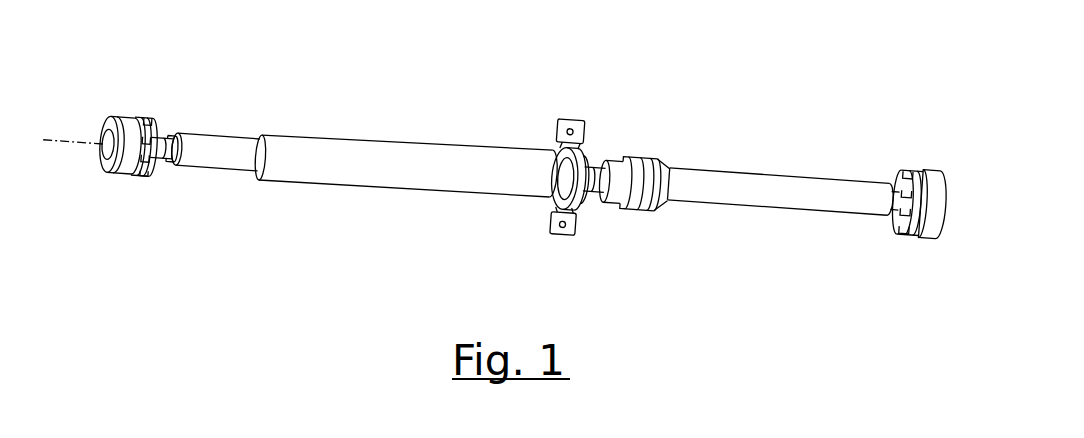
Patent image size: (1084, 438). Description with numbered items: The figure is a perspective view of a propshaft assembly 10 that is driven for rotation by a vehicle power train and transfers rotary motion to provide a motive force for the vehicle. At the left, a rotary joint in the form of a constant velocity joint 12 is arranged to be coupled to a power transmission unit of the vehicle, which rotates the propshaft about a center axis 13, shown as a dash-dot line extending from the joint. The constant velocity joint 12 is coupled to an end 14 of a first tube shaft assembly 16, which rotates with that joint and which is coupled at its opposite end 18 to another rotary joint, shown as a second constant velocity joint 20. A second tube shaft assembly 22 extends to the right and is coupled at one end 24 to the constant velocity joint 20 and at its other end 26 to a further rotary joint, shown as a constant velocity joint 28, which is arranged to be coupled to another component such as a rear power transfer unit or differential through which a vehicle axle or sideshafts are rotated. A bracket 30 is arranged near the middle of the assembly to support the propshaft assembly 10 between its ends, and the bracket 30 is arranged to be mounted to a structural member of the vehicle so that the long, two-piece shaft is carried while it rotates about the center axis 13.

The propshaft assembly 10 is at (786, 94).
The constant velocity joint 12 is at (121, 116).
The center axis 13 is at (84, 142).
The end of first tube shaft assembly 14 is at (165, 138).
The first tube shaft assembly 16 is at (290, 140).
The opposite end of first tube shaft assembly 18 is at (553, 150).
The constant velocity joint 20 is at (623, 158).
The second tube shaft assembly 22 is at (698, 178).
The end of second tube shaft assembly 24 is at (596, 186).
The other end of second tube shaft assembly 26 is at (892, 220).
The constant velocity joint 28 is at (912, 172).
The bracket 30 is at (559, 120).